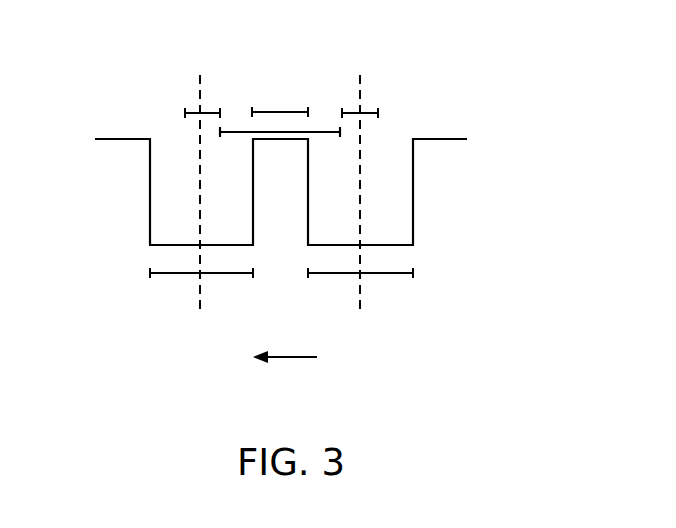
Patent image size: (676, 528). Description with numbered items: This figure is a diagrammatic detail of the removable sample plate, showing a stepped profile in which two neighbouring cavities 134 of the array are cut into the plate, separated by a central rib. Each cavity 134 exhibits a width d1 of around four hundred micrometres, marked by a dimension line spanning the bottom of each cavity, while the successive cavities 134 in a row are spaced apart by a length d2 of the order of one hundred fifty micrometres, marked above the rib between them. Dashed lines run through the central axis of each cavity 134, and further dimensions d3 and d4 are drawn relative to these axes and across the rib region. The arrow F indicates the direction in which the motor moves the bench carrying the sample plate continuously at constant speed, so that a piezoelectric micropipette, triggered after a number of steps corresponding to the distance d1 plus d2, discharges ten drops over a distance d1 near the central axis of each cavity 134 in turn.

The cavities 134 is at (166, 131).
The cavity width d1 is at (217, 273).
The cavity spacing length d2 is at (275, 112).
The offset distance d3 is at (388, 79).
The bar span width d4 is at (298, 134).
The arrow F is at (300, 365).